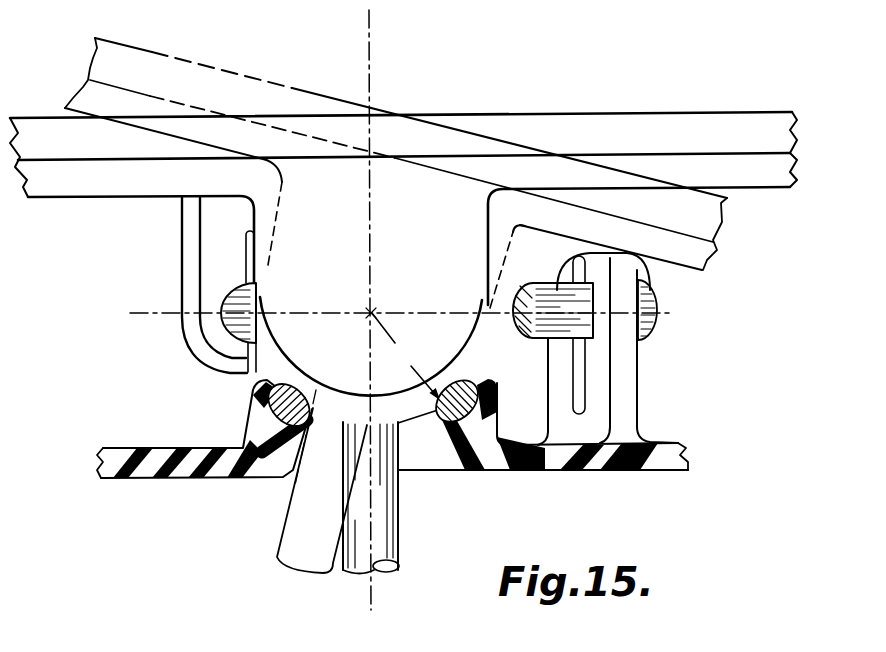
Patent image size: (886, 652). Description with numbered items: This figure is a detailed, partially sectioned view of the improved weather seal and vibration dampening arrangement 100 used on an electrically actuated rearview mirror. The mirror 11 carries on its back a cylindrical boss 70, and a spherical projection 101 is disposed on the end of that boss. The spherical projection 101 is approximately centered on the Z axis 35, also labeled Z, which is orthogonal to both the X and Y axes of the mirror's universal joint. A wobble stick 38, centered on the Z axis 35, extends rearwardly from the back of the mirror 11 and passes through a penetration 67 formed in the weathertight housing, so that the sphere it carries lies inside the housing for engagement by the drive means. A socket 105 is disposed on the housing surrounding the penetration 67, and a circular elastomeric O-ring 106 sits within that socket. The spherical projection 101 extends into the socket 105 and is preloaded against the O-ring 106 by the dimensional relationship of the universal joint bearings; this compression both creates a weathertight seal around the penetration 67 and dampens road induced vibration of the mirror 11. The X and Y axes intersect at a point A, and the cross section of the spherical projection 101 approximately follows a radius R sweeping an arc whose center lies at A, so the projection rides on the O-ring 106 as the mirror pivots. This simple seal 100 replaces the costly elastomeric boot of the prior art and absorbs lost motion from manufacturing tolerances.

The mirror 11 is at (482, 127).
The Z axis 35 is at (369, 97).
The cylindrical boss 70 is at (313, 187).
The wobble stick 38 is at (390, 533).
The penetration 67 is at (430, 460).
The seal and dampening arrangement 100 is at (148, 347).
The spherical projection 101 is at (448, 350).
The socket 105 is at (253, 413).
The O-ring 106 is at (253, 383).
The point A is at (373, 310).
The radius R is at (406, 356).
The Z axis Z is at (371, 62).